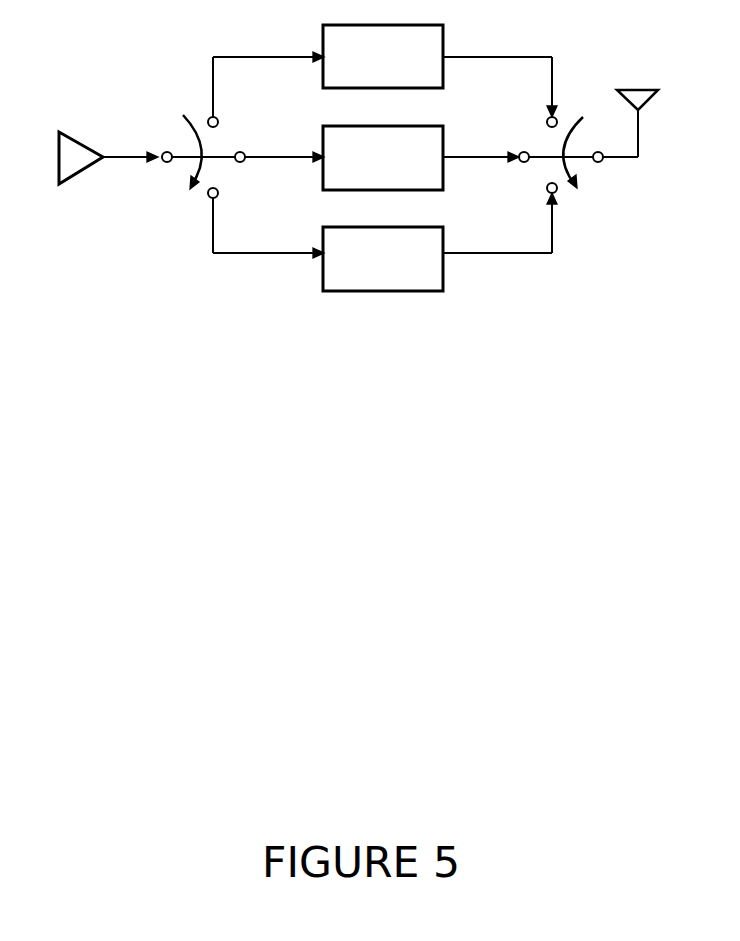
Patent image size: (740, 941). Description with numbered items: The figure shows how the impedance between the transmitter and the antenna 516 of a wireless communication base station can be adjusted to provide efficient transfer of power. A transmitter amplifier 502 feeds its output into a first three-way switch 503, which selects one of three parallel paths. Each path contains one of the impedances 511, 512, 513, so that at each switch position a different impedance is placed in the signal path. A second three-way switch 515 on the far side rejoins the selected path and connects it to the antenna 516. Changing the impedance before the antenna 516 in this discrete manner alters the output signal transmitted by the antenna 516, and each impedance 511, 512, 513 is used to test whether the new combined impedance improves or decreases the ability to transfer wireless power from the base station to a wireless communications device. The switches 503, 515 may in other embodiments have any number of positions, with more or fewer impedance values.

The transmitter amplifier 502 is at (101, 142).
The 3-way switch 503 is at (176, 223).
The impedance 511 is at (385, 66).
The impedance 512 is at (385, 166).
The impedance 513 is at (385, 268).
The 3-way switch 515 is at (620, 223).
The antenna 516 is at (656, 81).